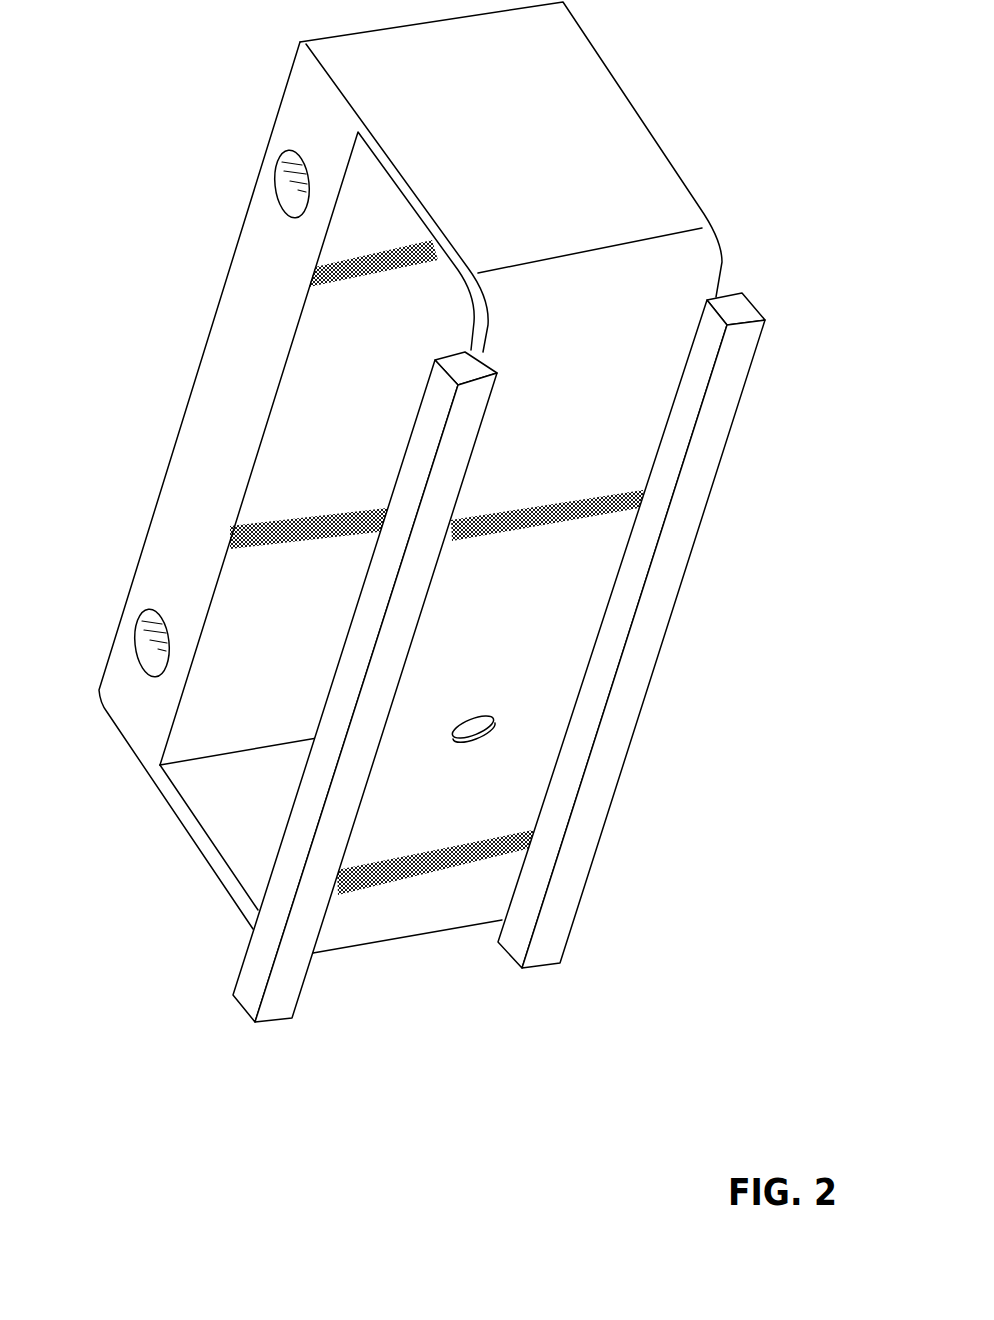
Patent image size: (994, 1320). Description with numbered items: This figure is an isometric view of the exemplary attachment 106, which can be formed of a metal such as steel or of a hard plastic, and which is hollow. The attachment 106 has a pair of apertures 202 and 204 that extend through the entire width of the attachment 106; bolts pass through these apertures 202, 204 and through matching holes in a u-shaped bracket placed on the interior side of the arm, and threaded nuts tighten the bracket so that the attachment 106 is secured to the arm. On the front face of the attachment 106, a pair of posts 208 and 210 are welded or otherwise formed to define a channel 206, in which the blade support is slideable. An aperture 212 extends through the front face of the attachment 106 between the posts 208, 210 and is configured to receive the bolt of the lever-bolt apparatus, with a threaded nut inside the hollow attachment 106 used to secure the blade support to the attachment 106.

The attachment 106 is at (661, 48).
The aperture 202 is at (275, 180).
The aperture 204 is at (143, 615).
The channel 206 is at (612, 561).
The post 208 is at (410, 445).
The post 210 is at (708, 480).
The aperture 212 is at (478, 713).